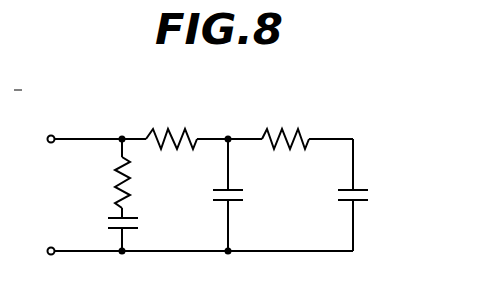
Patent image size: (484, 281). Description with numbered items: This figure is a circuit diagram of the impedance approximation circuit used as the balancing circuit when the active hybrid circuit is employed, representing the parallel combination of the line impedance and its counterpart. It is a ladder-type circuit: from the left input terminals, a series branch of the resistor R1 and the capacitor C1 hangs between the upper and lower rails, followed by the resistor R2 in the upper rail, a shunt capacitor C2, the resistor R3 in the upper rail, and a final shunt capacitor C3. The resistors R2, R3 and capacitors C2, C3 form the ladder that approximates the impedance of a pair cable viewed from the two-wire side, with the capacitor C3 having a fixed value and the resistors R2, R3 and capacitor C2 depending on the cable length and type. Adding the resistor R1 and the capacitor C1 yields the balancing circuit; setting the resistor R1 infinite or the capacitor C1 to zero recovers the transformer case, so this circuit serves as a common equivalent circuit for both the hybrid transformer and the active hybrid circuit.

The resistor R1 is at (101, 182).
The resistor R2 is at (171, 125).
The resistor R3 is at (285, 125).
The capacitor C1 is at (105, 229).
The capacitor C2 is at (246, 200).
The capacitor C3 is at (370, 199).